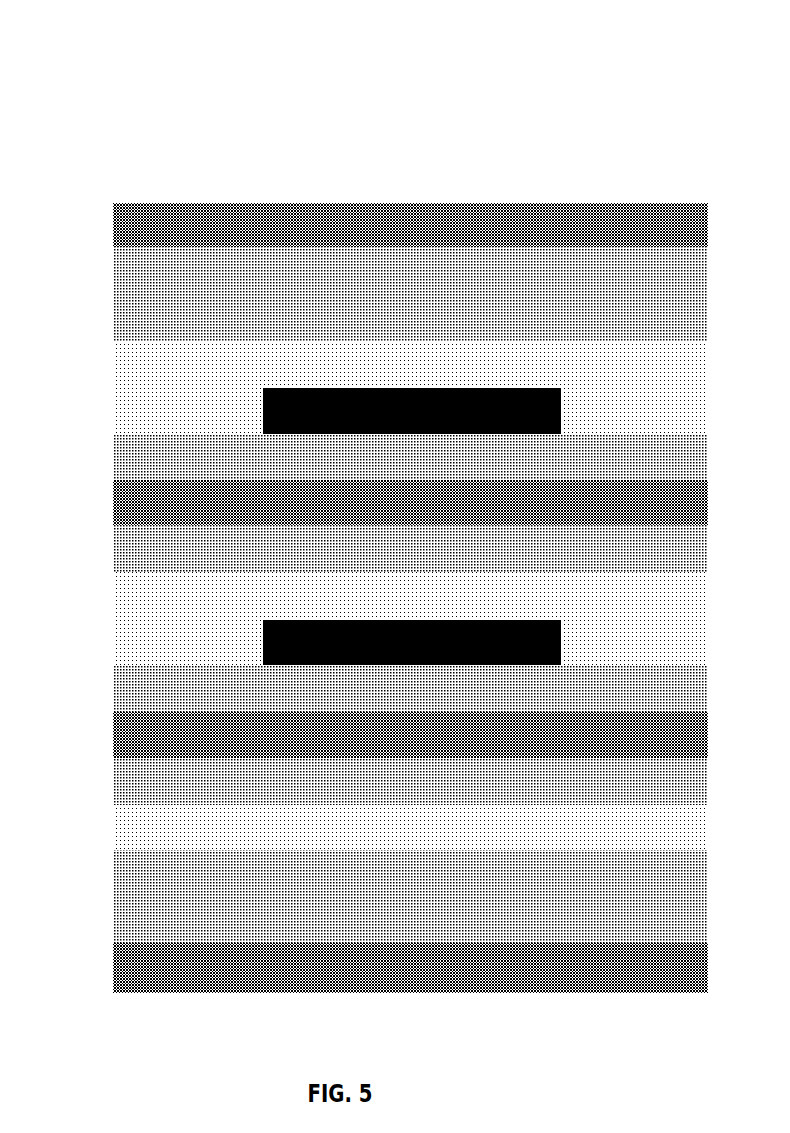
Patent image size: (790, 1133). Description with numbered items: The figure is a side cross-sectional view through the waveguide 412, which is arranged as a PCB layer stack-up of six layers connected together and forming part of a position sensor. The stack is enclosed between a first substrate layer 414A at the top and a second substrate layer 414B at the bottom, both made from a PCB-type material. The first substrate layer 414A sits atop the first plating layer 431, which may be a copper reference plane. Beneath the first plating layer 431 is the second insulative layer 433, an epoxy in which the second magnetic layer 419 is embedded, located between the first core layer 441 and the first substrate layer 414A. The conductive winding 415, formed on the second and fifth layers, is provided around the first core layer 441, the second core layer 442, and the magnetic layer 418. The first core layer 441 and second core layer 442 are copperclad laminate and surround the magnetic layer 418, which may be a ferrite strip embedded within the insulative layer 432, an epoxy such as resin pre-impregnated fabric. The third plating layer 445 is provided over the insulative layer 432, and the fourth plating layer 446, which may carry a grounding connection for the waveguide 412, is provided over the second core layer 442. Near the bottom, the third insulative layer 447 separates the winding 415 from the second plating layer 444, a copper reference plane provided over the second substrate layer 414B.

The waveguide 412 is at (262, 88).
The first substrate layer 414A is at (122, 225).
The first plating layer 431 is at (122, 307).
The second insulative layer 433 is at (127, 383).
The second magnetic layer 419 is at (270, 403).
The conductive winding 415 is at (120, 459).
The first core layer 441 is at (116, 512).
The third plating layer 445 is at (120, 556).
The insulative layer 432 is at (126, 624).
The magnetic layer 418 is at (270, 631).
The fourth plating layer 446 is at (131, 688).
The second core layer 442 is at (120, 740).
The third insulative layer 447 is at (127, 835).
The second plating layer 444 is at (125, 900).
The second substrate layer 414B is at (122, 970).